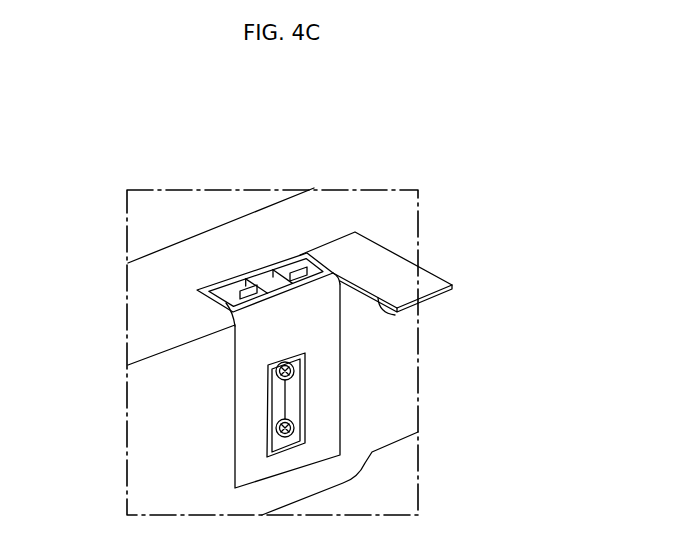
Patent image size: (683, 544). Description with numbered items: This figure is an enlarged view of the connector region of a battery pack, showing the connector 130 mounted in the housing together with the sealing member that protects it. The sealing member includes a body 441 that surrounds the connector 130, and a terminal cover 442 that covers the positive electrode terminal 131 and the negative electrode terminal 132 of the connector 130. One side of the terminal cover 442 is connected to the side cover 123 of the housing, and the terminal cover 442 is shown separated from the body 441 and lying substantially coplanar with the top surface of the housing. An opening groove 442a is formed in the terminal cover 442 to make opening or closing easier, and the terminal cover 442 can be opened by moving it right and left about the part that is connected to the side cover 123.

The side cover 123 is at (402, 393).
The connector 130 is at (222, 276).
The positive electrode terminal 131 is at (293, 275).
The negative electrode terminal 132 is at (243, 285).
The body 441 is at (247, 400).
The terminal cover 442 is at (385, 258).
The opening groove 442a is at (395, 315).